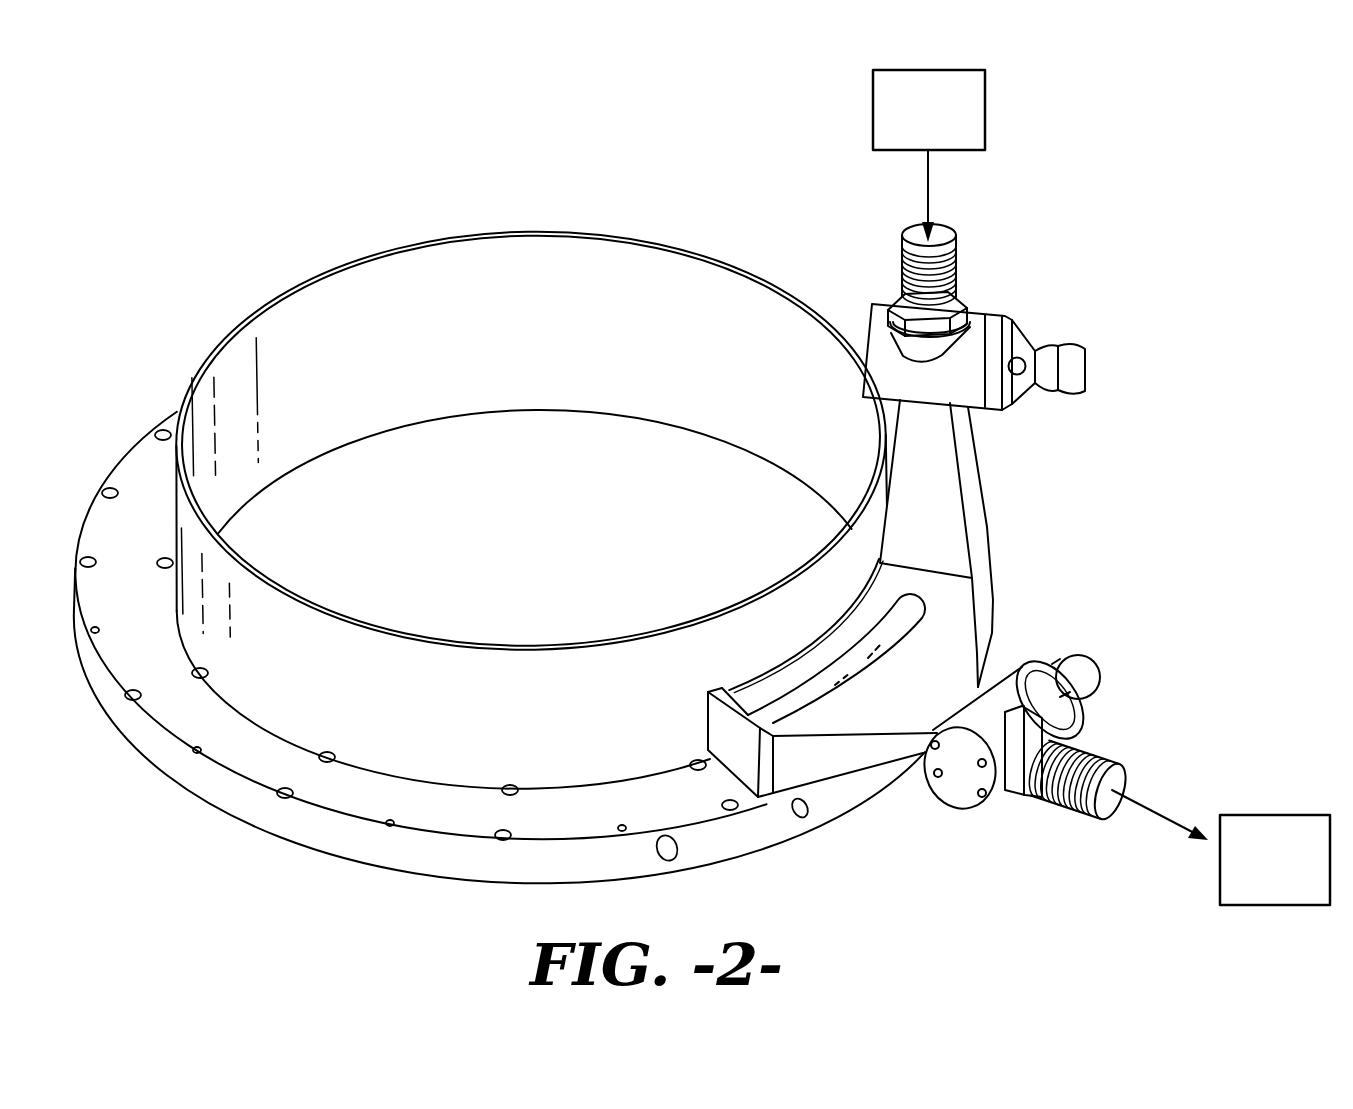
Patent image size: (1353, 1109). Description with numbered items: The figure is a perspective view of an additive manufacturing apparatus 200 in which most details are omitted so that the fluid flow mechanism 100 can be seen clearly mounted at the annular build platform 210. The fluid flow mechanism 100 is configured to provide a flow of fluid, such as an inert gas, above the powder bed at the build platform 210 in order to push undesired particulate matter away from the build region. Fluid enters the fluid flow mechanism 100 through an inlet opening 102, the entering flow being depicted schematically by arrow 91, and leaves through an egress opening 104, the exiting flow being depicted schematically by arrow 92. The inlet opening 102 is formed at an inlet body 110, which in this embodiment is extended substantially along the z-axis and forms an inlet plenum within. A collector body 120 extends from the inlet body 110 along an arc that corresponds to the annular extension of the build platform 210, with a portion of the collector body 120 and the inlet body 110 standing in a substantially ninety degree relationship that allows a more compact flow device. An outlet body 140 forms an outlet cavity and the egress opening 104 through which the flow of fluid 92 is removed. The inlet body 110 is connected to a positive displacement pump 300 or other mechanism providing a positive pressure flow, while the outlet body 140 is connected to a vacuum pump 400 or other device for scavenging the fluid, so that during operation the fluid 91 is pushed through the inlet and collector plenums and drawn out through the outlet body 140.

The additive manufacturing apparatus 200 is at (388, 203).
The build platform 210 is at (407, 808).
The fluid flow mechanism 100 is at (1019, 272).
The inlet opening 102 is at (955, 216).
The egress opening 104 is at (1108, 792).
The inlet body 110 is at (985, 483).
The collector body 120 is at (917, 568).
The outlet body 140 is at (873, 752).
The flow of fluid 91 is at (925, 172).
The flow of fluid 92 is at (1152, 810).
The positive displacement pump 300 is at (953, 127).
The vacuum pump 400 is at (1300, 880).